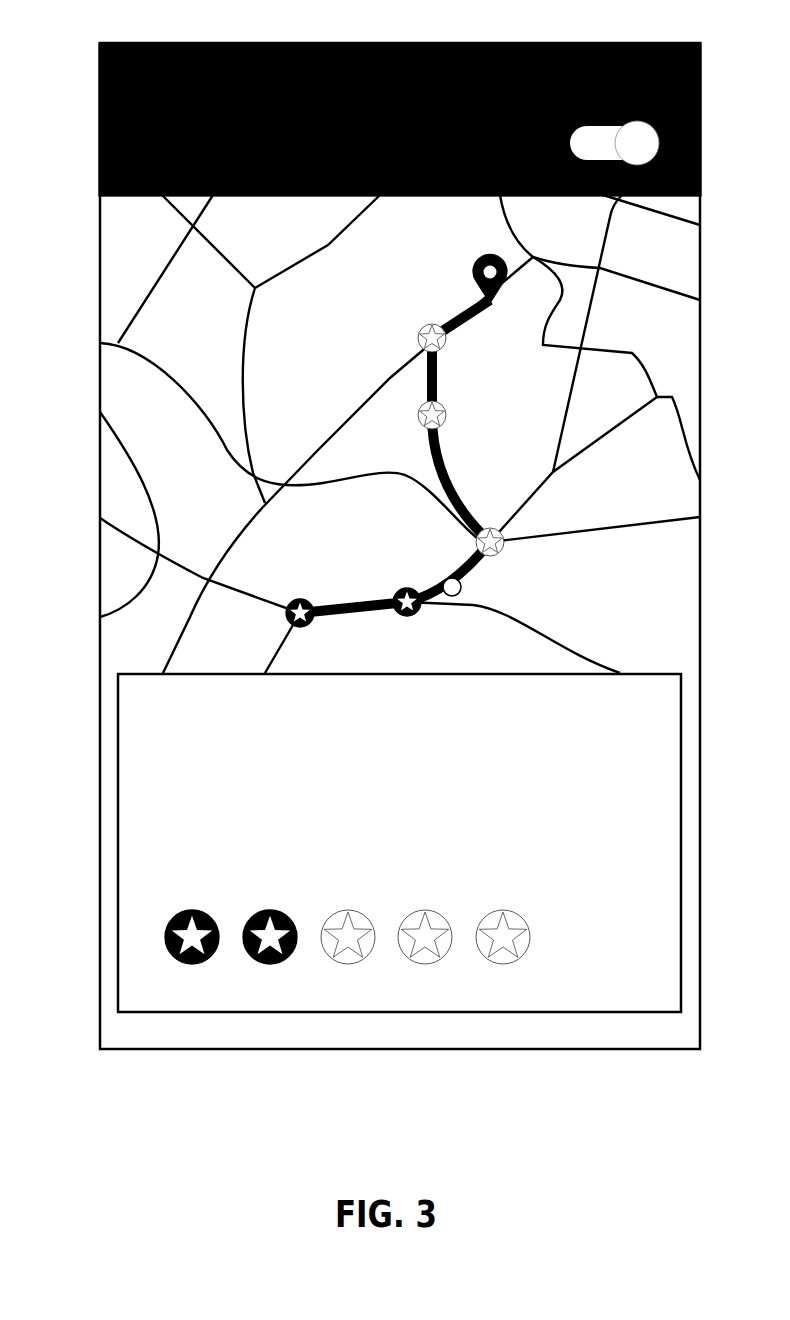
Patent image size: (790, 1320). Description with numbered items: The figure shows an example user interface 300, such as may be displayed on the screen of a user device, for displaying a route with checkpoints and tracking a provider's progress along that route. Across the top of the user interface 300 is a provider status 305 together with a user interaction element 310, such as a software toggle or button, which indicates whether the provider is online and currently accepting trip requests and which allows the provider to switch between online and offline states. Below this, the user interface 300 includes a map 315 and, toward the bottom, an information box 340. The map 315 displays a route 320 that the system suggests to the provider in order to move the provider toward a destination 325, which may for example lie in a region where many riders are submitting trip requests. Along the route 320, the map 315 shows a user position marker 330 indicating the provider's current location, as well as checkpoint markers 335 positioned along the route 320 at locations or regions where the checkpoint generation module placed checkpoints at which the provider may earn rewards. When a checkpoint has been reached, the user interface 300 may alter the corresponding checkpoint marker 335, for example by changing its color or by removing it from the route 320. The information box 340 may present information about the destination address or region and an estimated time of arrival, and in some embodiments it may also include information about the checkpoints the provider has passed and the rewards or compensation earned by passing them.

The user interface 300 is at (232, 43).
The provider status 305 is at (376, 119).
The user interaction element 310 is at (614, 130).
The map 315 is at (376, 434).
The route 320 is at (402, 458).
The destination 325 is at (488, 268).
The user position marker 330 is at (445, 574).
The checkpoint markers 335 is at (300, 602).
The information box 340 is at (117, 767).